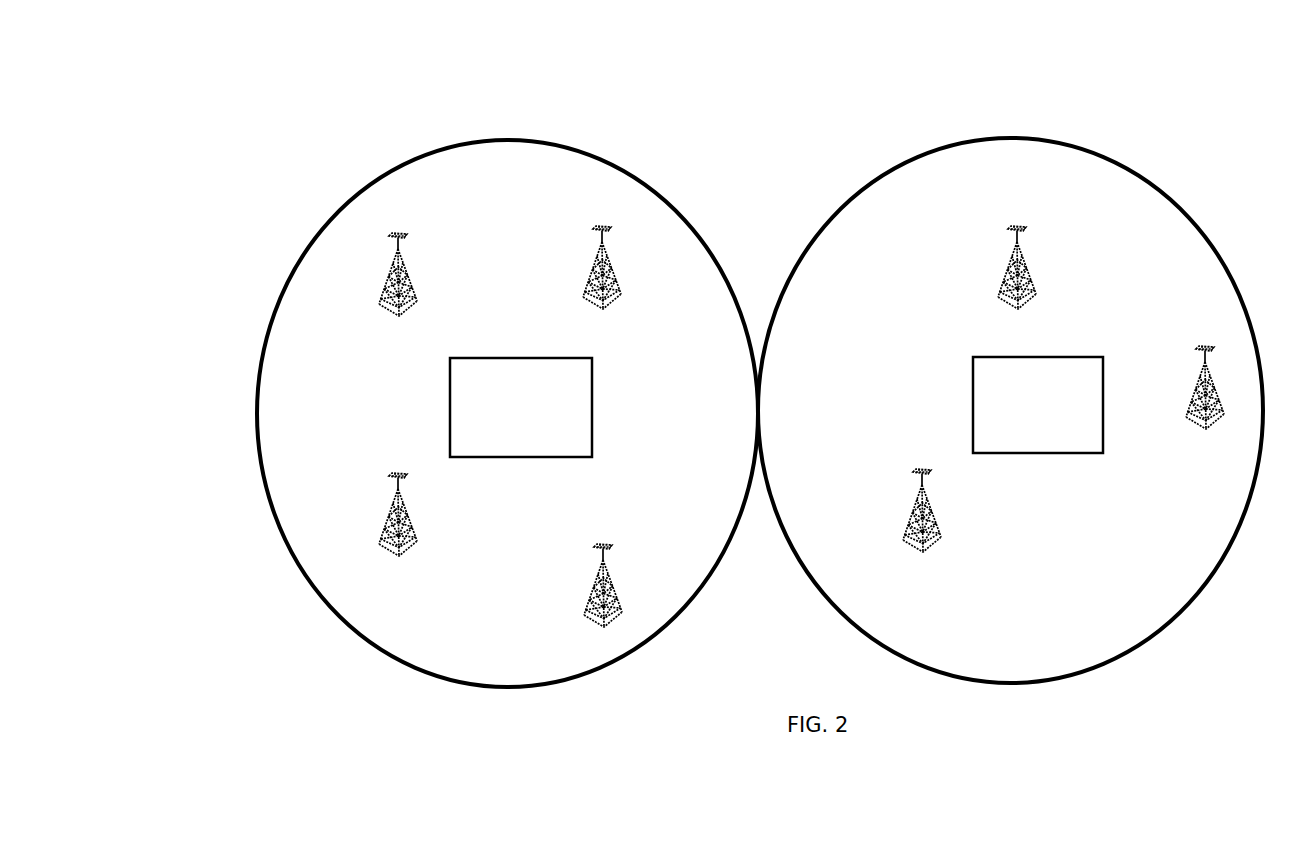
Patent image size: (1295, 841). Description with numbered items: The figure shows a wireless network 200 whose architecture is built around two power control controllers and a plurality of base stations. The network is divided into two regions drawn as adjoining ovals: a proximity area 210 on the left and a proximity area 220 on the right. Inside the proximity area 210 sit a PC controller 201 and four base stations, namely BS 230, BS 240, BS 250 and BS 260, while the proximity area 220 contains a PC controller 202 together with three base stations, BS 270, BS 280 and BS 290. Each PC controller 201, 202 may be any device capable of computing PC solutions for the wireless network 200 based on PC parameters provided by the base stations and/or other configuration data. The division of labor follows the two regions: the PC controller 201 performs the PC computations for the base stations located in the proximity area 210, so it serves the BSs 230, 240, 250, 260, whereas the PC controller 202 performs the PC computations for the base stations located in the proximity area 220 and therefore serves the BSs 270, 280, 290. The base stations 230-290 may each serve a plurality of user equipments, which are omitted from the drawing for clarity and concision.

The wireless network 200 is at (240, 112).
The PC controller 201 is at (535, 445).
The PC controller 202 is at (1058, 441).
The proximity area 210 is at (535, 661).
The proximity area 220 is at (1046, 643).
The BS 230 is at (600, 224).
The BS 240 is at (592, 543).
The BS 250 is at (391, 470).
The BS 260 is at (410, 233).
The BS 270 is at (1015, 223).
The BS 280 is at (914, 467).
The BS 290 is at (1194, 344).